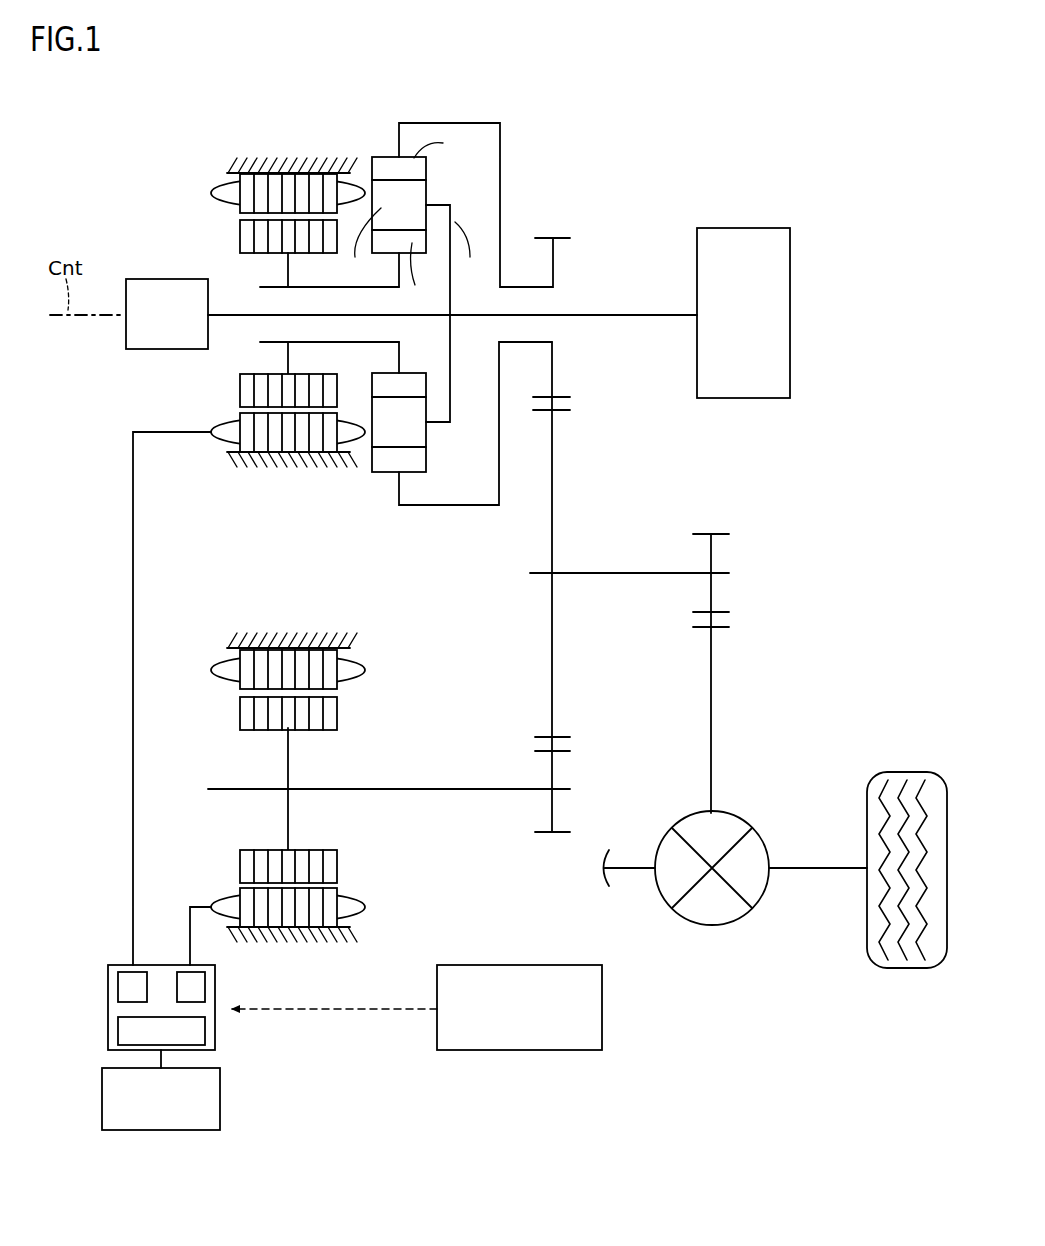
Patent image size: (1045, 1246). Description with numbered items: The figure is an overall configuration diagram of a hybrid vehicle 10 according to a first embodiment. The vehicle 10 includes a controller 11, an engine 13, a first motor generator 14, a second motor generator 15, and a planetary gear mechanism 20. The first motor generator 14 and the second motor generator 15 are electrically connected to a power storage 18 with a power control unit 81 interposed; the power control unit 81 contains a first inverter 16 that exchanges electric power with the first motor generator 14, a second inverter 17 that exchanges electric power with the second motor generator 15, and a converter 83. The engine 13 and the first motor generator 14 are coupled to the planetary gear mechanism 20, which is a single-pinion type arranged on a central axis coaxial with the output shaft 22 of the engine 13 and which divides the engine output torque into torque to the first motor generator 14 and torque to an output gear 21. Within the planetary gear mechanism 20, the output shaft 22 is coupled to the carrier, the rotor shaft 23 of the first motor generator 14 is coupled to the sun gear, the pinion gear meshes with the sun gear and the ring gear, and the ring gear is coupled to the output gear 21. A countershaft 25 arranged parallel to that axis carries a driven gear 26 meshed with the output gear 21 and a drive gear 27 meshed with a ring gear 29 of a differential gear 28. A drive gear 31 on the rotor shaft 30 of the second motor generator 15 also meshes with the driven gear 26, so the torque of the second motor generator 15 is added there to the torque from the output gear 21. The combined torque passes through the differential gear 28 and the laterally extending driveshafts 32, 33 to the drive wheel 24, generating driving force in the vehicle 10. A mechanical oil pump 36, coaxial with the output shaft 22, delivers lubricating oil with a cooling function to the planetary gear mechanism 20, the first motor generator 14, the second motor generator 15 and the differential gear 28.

The hybrid vehicle 10 is at (699, 153).
The controller 11 is at (560, 965).
The engine 13 is at (792, 261).
The first motor generator 14 is at (212, 176).
The second motor generator 15 is at (212, 654).
The first inverter 16 is at (118, 978).
The second inverter 17 is at (205, 978).
The power storage 18 is at (212, 1068).
The planetary gear mechanism 20 is at (360, 134).
The output gear 21 is at (562, 395).
The output shaft 22 is at (658, 312).
The rotor shaft 23 is at (265, 285).
The drive wheel 24 is at (906, 770).
The countershaft 25 is at (617, 577).
The driven gear 26 is at (562, 412).
The drive gear 27 is at (723, 536).
The differential gear 28 is at (736, 819).
The ring gear 29 is at (723, 630).
The rotor shaft 30 is at (220, 788).
The drive gear 31 is at (560, 752).
The driveshaft 32 is at (630, 870).
The driveshaft 33 is at (818, 870).
The mechanical oil pump 36 is at (166, 278).
The power control unit 81 is at (108, 1006).
The converter 83 is at (118, 1033).